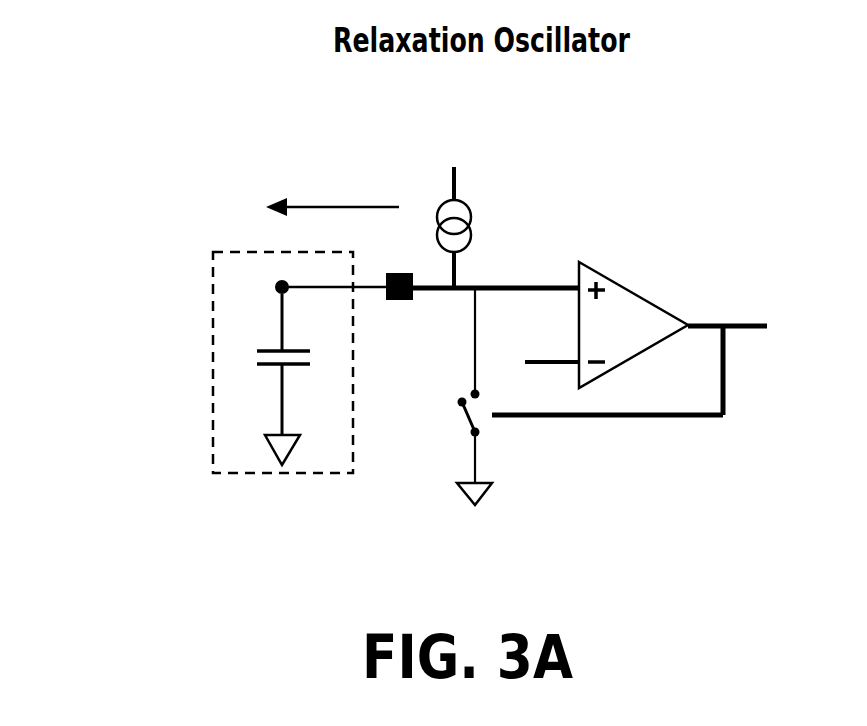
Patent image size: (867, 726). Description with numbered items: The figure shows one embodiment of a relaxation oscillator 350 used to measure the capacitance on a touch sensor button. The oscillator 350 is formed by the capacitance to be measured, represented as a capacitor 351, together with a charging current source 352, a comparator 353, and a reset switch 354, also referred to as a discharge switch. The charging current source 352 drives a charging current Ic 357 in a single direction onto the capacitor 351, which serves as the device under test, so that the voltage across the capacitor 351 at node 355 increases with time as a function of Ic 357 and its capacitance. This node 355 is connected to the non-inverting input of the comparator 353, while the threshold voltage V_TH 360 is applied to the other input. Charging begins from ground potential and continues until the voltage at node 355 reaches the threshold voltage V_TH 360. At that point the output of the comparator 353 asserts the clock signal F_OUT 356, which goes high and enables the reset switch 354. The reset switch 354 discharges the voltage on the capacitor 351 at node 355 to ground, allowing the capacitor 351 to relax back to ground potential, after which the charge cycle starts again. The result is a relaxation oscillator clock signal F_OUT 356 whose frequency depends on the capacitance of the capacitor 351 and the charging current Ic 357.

The relaxation oscillator 350 is at (703, 130).
The capacitor 351 is at (215, 442).
The charging current source 352 is at (466, 204).
The comparator 353 is at (630, 292).
The reset switch 354 is at (477, 460).
The node 355 is at (280, 287).
The clock signal F_OUT 356 is at (740, 290).
The charging current Ic 357 is at (332, 191).
The threshold voltage V_TH 360 is at (513, 342).